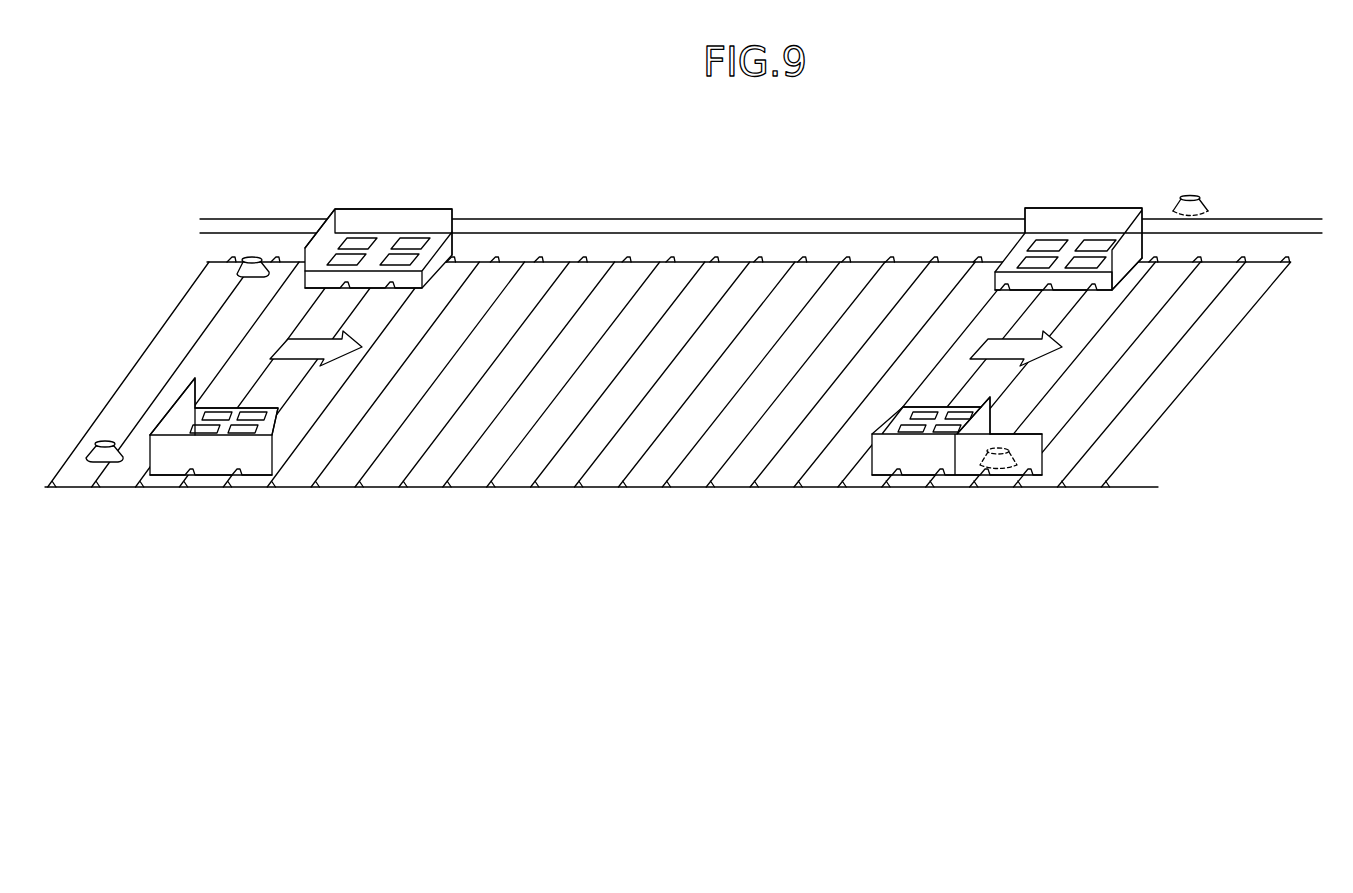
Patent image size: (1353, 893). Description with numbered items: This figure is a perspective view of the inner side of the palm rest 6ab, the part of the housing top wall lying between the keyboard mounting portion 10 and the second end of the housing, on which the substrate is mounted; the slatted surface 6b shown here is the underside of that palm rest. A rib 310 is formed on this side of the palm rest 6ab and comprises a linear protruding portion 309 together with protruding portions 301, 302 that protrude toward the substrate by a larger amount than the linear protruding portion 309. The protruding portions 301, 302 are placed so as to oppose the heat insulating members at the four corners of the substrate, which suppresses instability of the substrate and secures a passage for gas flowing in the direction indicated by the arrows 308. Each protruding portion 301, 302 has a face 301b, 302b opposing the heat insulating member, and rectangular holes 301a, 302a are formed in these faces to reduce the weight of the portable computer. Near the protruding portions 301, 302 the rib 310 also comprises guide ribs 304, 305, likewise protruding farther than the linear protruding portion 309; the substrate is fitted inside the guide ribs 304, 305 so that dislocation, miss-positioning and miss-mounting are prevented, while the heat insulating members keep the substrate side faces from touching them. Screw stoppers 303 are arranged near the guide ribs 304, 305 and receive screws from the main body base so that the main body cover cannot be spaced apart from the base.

The keyboard mounting portion 10 is at (707, 219).
The palm rest 6ab is at (160, 330).
The conveyor slats 6b is at (576, 462).
The protruding portion 301 is at (253, 433).
The rectangular hole 301a is at (205, 427).
The face 301b is at (280, 415).
The protruding portion 302 is at (325, 257).
The rectangular hole 302a is at (397, 255).
The face 302b is at (385, 238).
The screw stopper 303 is at (97, 464).
The guide rib 304 is at (429, 215).
The guide rib 305 is at (1125, 243).
The arrows 308 is at (320, 362).
The linear protruding portion 309 is at (1203, 368).
The rib 310 is at (1224, 304).